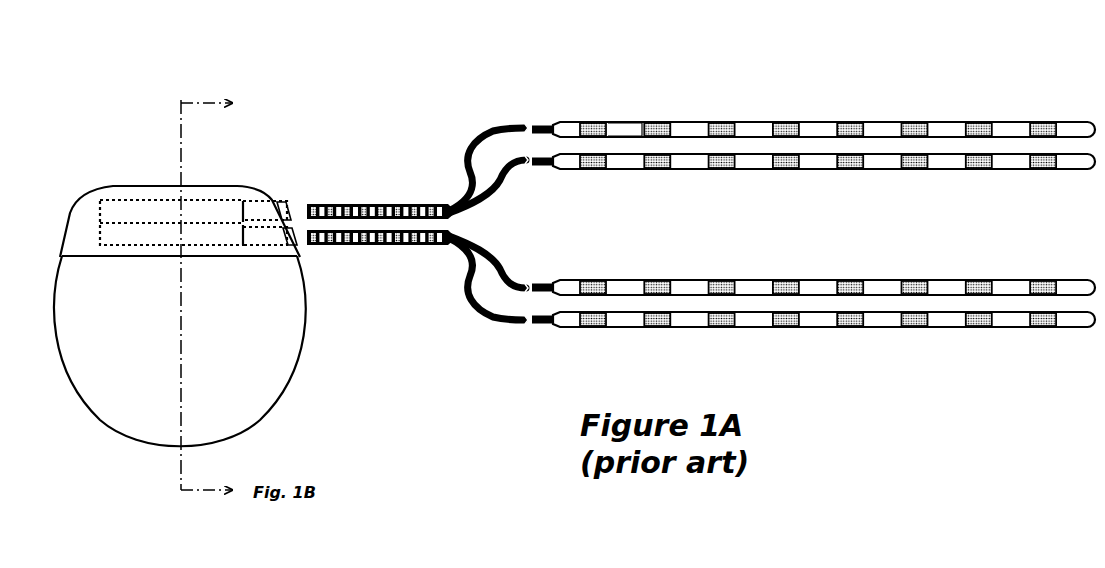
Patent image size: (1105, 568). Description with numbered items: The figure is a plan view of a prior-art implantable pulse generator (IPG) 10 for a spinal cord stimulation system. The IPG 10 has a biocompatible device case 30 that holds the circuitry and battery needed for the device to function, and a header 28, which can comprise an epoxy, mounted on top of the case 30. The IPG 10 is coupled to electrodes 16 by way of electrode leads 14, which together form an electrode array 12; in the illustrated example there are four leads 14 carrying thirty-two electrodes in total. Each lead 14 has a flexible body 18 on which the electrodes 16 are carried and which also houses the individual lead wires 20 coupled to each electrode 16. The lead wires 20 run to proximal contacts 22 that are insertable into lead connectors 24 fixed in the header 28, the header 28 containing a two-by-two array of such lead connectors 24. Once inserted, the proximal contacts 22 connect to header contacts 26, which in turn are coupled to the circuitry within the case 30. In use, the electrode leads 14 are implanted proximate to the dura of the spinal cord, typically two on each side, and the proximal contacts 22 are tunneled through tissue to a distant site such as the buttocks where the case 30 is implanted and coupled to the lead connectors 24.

The implantable pulse generator 10 is at (134, 133).
The electrode array 12 is at (836, 190).
The electrode lead 14 is at (960, 98).
The electrode 16 is at (730, 122).
The flexible body 18 is at (637, 122).
The lead wire 20 is at (478, 126).
The proximal contact 22 is at (388, 185).
The lead connector 24 is at (305, 262).
The header contact 26 is at (152, 210).
The header 28 is at (212, 188).
The device case 30 is at (288, 353).